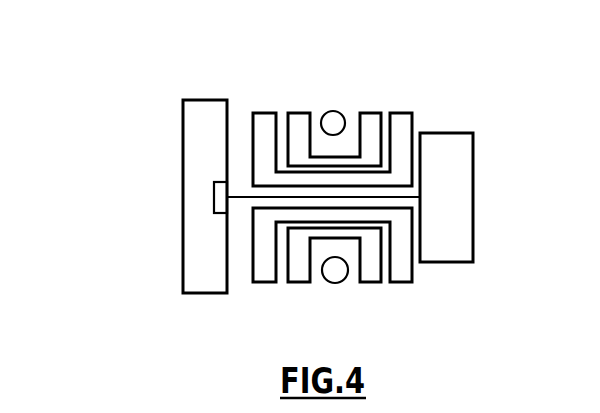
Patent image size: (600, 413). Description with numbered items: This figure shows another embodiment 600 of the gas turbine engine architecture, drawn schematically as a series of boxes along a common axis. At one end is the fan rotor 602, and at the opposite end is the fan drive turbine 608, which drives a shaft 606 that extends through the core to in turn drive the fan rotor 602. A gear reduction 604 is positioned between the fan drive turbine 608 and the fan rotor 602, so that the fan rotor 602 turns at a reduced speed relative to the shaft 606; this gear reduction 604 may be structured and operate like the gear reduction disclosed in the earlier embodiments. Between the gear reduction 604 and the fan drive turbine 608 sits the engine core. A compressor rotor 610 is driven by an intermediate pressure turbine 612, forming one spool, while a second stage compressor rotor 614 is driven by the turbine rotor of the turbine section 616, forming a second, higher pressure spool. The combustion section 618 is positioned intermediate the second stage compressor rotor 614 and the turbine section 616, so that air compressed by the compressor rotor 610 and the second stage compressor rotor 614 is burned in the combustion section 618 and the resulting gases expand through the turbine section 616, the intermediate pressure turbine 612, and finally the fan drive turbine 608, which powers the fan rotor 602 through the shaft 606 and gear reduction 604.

The embodiment 600 is at (135, 71).
The fan rotor 602 is at (193, 145).
The gear reduction 604 is at (216, 207).
The shaft 606 is at (396, 198).
The fan drive turbine 608 is at (460, 178).
The compressor rotor 610 is at (262, 258).
The intermediate pressure turbine 612 is at (403, 200).
The second stage compressor rotor 614 is at (300, 116).
The turbine section 616 is at (372, 117).
The combustion section 618 is at (335, 112).